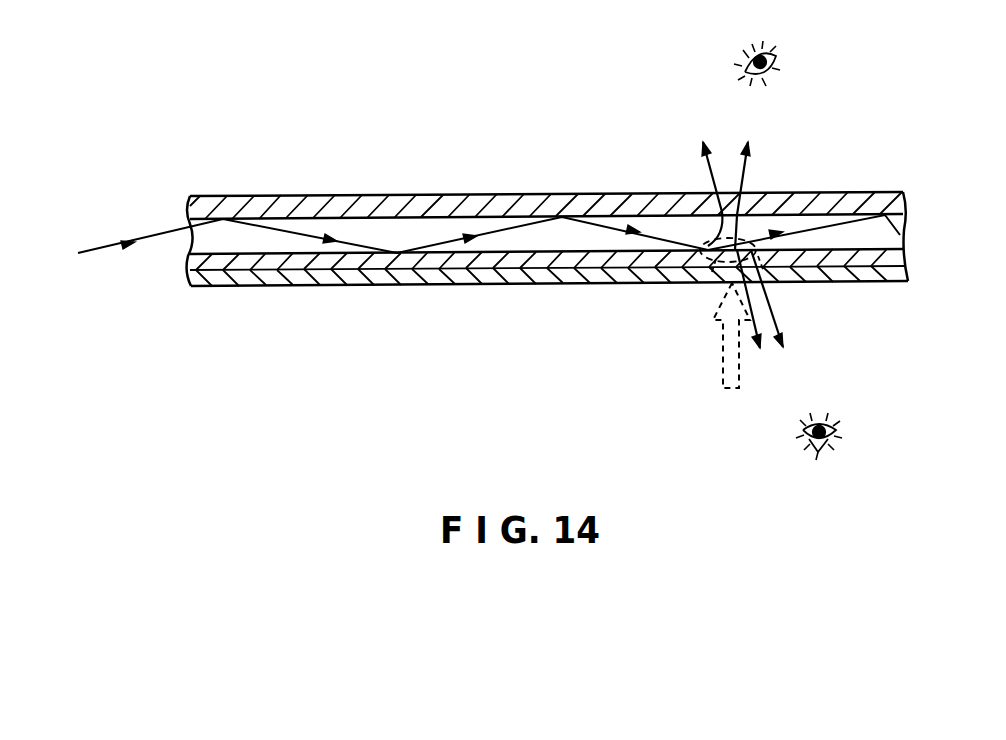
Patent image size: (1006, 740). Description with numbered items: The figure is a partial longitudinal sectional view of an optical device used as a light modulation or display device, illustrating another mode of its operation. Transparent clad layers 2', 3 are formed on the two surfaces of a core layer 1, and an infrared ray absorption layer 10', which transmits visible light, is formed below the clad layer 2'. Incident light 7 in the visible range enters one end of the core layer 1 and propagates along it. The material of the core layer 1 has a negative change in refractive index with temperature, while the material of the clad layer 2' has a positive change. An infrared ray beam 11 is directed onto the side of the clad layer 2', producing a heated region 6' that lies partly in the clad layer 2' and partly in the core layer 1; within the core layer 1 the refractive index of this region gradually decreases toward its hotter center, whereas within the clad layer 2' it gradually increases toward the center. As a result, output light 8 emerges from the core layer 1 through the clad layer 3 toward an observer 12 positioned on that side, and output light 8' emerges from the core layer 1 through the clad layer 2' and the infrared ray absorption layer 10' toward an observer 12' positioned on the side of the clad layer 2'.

The core layer 1 is at (903, 228).
The clad layer 2' is at (579, 257).
The clad layer 3 is at (905, 200).
The heated region 6' is at (769, 209).
The incident light 7 is at (113, 246).
The output light 8 is at (750, 182).
The output light 8' is at (789, 299).
The infrared ray absorption layer 10' is at (581, 291).
The infrared ray beam 11 is at (720, 368).
The observer 12 is at (795, 58).
The observer 12' is at (855, 436).